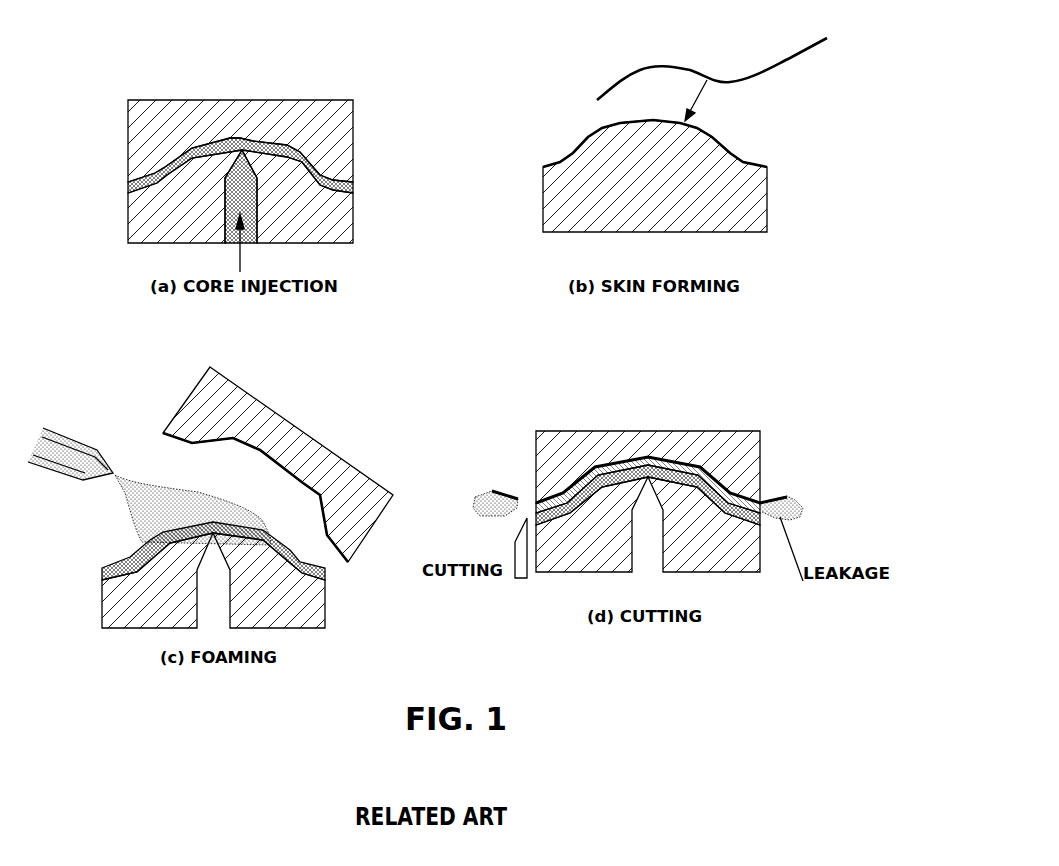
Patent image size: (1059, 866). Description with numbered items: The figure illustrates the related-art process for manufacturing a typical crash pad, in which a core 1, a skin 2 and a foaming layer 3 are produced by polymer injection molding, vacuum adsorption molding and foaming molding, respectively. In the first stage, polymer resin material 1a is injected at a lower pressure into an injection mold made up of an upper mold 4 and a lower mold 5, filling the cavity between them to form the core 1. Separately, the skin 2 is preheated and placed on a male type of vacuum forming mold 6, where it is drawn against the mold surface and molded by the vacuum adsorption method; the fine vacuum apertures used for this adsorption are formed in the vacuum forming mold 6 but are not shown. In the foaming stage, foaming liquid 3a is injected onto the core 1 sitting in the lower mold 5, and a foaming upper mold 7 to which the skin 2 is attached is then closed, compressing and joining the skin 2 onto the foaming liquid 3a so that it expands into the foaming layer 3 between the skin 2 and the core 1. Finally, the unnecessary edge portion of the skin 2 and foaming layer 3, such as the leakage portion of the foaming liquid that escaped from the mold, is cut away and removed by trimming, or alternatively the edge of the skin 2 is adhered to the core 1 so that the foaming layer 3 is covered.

The core 1 is at (253, 147).
The polymer resin material 1a is at (250, 203).
The skin 2 is at (626, 78).
The foaming layer 3 is at (683, 467).
The foaming liquid 3a is at (140, 513).
The upper mold 4 is at (140, 146).
The lower mold 5 is at (140, 223).
The vacuum forming mold 6 is at (752, 196).
The upper mold 7 is at (193, 407).